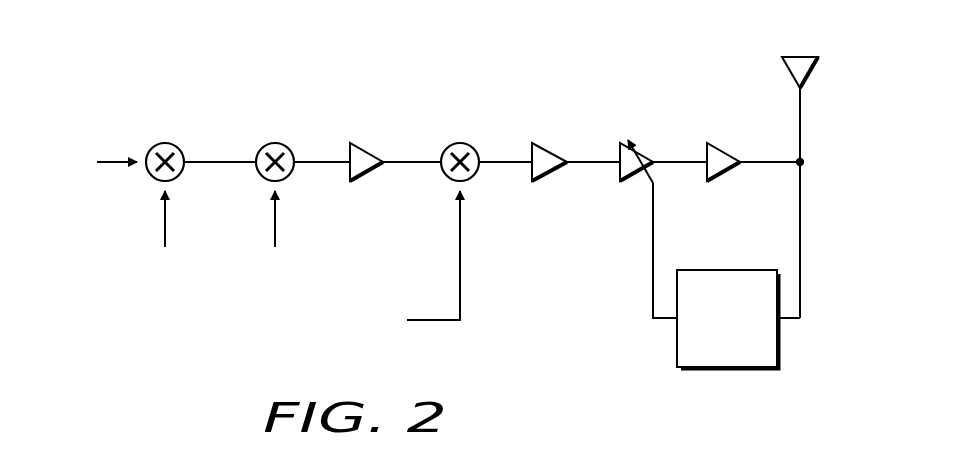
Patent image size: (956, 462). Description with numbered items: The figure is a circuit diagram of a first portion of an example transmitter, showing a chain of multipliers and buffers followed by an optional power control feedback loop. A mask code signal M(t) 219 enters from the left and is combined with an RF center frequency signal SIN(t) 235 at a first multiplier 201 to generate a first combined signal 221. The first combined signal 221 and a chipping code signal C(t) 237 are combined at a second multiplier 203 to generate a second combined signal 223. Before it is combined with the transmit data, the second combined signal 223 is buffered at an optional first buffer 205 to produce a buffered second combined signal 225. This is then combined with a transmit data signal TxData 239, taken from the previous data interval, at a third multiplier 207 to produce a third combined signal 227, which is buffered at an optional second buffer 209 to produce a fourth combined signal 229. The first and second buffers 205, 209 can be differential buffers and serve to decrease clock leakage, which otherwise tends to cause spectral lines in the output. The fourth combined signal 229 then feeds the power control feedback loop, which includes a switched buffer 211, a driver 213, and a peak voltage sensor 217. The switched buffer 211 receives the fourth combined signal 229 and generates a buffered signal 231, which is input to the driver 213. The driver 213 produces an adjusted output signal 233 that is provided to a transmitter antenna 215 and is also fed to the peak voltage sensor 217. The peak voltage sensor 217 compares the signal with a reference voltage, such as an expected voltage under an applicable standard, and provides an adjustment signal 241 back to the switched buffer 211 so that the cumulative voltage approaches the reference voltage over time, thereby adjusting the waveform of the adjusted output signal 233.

The first multiplier 201 is at (173, 145).
The second multiplier 203 is at (283, 145).
The first buffer 205 is at (366, 143).
The third multiplier 207 is at (466, 145).
The second buffer 209 is at (552, 145).
The switched buffer 211 is at (640, 152).
The driver 213 is at (725, 145).
The transmitter antenna 215 is at (779, 70).
The peak voltage sensor 217 is at (733, 270).
The mask code signal M(t) 219 is at (119, 165).
The first combined signal 221 is at (222, 165).
The second combined signal 223 is at (319, 165).
The buffered second combined signal 225 is at (410, 165).
The third combined signal 227 is at (505, 165).
The fourth combined signal 229 is at (589, 165).
The buffered signal 231 is at (686, 165).
The adjusted output signal 233 is at (773, 165).
The RF center frequency signal SIN(t) 235 is at (164, 222).
The chipping code signal C(t) 237 is at (274, 222).
The transmit data signal TxData(k-1) 239 is at (432, 317).
The adjustment signal 241 is at (652, 248).